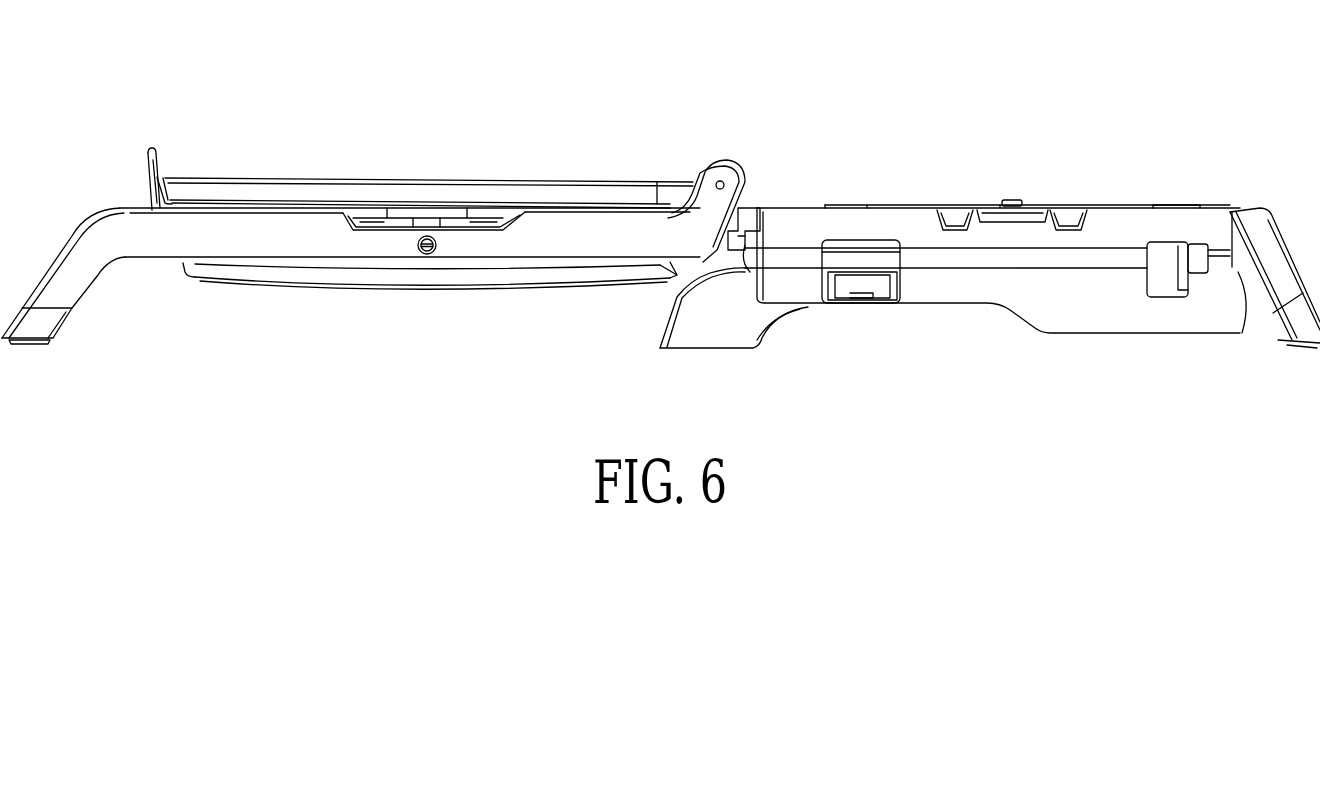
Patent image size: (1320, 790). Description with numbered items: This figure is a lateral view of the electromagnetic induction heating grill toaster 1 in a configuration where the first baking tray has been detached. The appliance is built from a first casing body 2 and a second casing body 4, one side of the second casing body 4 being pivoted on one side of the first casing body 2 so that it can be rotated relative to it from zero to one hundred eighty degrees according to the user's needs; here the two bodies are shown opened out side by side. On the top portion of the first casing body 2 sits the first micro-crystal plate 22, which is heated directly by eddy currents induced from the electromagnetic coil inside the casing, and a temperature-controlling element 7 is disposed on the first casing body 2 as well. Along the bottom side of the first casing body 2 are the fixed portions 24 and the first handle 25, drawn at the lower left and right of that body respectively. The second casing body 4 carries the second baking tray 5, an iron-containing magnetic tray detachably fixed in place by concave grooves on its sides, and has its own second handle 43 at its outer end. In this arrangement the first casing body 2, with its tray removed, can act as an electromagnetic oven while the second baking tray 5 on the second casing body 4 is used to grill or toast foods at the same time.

The electromagnetic induction heating grill toaster 1 is at (626, 118).
The first casing body 2 is at (970, 284).
The second casing body 4 is at (380, 284).
The second baking tray 5 is at (238, 183).
The temperature-controlling element 7 is at (1016, 200).
The first micro-crystal plate 22 is at (882, 204).
The fixed portion 24 is at (700, 313).
The first handle 25 is at (1293, 323).
The second handle 43 is at (45, 323).